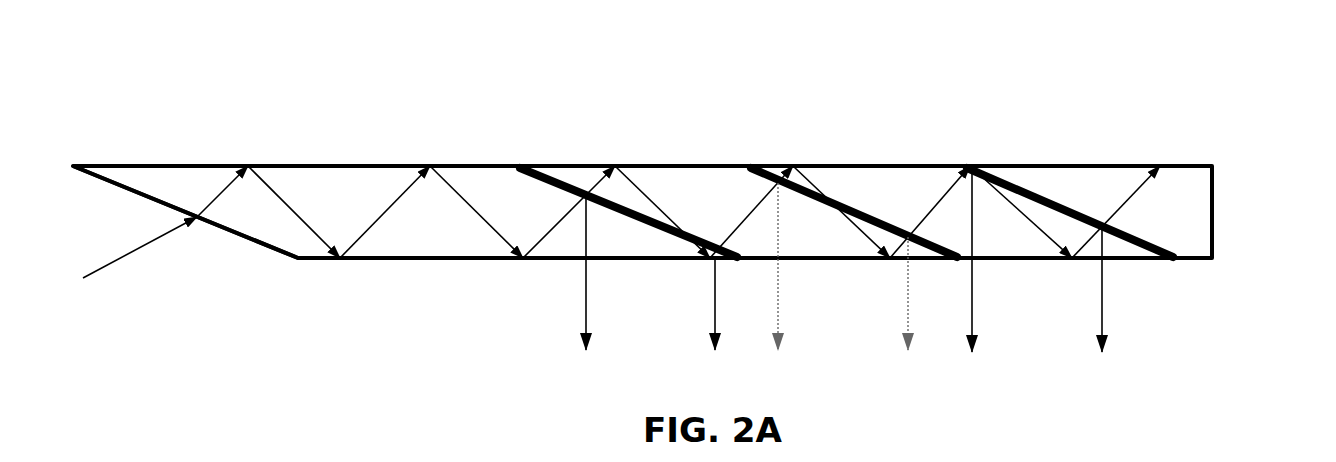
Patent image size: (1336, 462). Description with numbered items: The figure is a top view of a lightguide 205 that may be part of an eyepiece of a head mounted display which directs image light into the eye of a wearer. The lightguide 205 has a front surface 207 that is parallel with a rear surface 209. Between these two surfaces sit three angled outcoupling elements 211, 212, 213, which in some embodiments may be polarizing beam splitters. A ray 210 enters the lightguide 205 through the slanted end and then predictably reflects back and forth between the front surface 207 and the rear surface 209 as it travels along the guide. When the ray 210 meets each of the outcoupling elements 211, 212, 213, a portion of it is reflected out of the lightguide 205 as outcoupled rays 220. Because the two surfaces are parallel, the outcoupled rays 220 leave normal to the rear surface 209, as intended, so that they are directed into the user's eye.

The lightguide 205 is at (1185, 124).
The front surface 207 is at (1002, 163).
The rear surface 209 is at (338, 260).
The ray 210 is at (148, 243).
The outcoupling element 211 is at (520, 166).
The outcoupling element 212 is at (750, 167).
The outcoupling element 213 is at (962, 166).
The outcoupled rays 220 is at (588, 296).